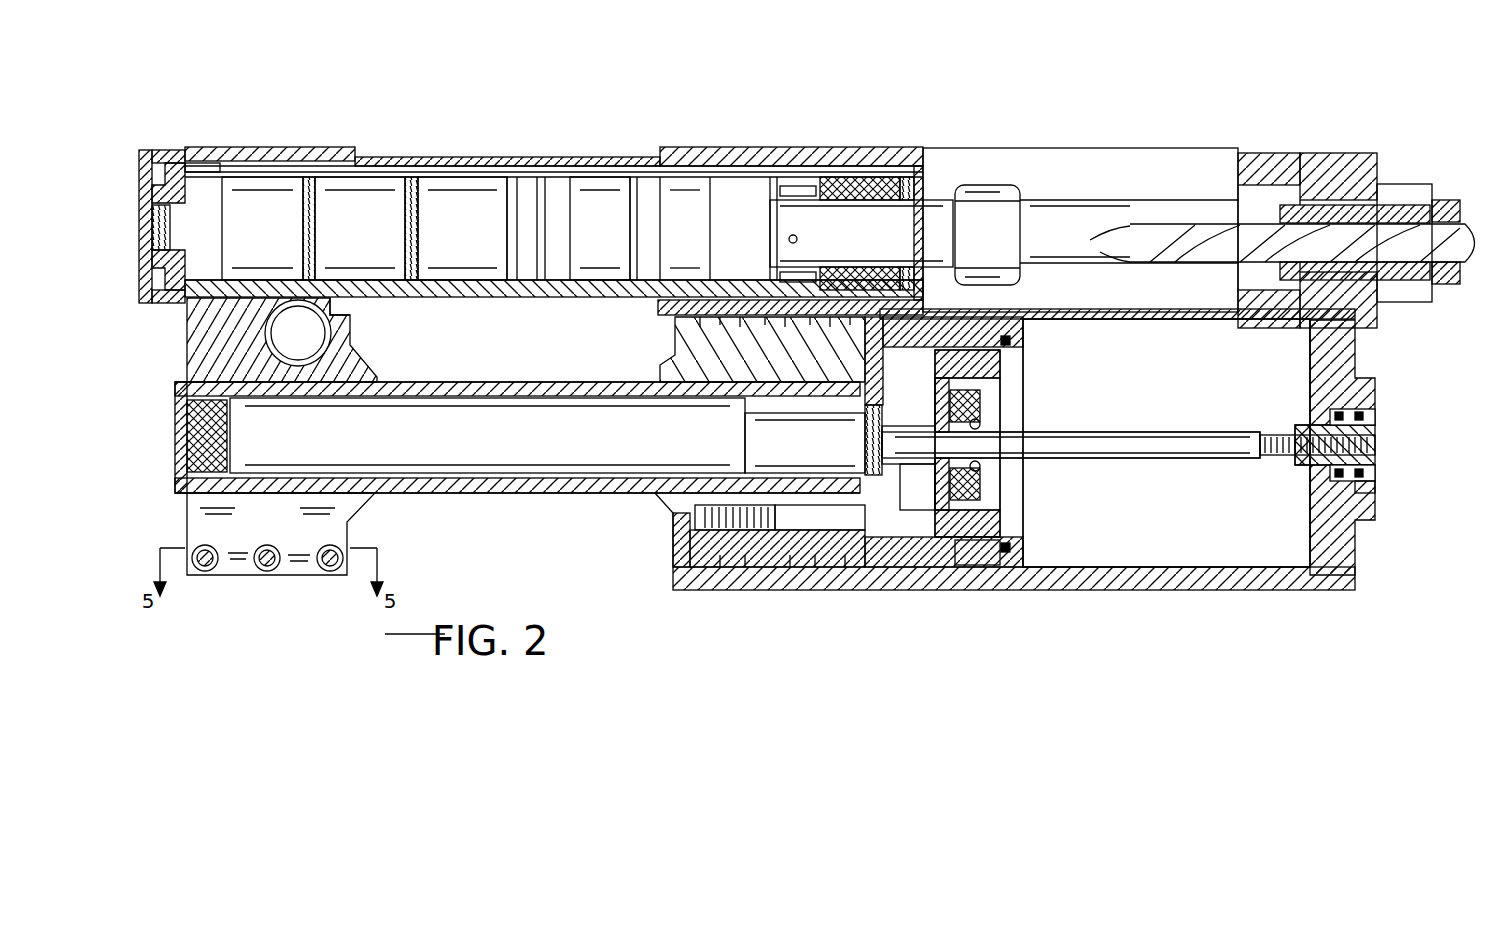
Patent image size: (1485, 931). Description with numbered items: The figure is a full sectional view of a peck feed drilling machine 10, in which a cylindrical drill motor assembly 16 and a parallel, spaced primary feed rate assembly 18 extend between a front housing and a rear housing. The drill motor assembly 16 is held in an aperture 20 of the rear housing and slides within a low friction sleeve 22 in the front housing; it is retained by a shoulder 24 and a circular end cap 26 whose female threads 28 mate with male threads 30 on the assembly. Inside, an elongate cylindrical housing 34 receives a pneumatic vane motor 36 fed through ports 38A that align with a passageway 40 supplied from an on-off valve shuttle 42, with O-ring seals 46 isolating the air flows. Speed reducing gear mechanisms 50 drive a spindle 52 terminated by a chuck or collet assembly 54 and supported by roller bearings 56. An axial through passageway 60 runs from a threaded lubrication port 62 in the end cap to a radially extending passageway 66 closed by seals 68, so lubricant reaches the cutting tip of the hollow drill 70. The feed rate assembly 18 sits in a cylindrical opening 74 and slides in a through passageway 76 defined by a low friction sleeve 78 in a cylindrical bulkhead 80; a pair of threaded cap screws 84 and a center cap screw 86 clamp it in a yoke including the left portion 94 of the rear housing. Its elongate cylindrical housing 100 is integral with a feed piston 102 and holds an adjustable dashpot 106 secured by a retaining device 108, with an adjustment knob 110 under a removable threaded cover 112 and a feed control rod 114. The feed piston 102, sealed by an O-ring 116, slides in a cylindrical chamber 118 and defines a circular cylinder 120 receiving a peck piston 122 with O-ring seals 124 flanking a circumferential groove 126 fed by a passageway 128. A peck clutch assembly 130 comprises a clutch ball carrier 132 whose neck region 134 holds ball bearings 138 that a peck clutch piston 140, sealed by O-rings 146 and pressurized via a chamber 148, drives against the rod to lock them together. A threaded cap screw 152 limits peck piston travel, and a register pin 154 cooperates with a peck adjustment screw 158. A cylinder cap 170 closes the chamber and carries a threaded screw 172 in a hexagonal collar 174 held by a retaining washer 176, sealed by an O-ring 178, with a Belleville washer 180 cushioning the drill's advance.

The peck feed drilling machine 10 is at (778, 60).
The cylindrical drill motor assembly 16 is at (622, 88).
The primary feed rate assembly 18 is at (598, 504).
The aperture 20 is at (266, 162).
The low friction sleeve 22 is at (662, 160).
The shoulder 24 is at (356, 148).
The circular end cap 26 is at (142, 158).
The female threads 28 is at (177, 160).
The male threads 30 is at (190, 162).
The elongate cylindrical housing 34 is at (432, 158).
The pneumatic vane motor 36 is at (377, 215).
The ports 38A is at (335, 282).
The passageway 40 is at (346, 322).
The on-off valve shuttle 42 is at (284, 347).
The O-ring seals 46 is at (306, 256).
The speed reducing gear mechanisms 50 is at (613, 243).
The spindle 52 is at (884, 255).
The chuck or collet assembly 54 is at (969, 248).
The roller bearings 56 is at (868, 178).
The axial through passageway 60 is at (522, 165).
The threaded lubrication port 62 is at (152, 230).
The radially extending passageway 66 is at (797, 238).
The seals 68 is at (777, 175).
The hollow drill 70 is at (1462, 224).
The cylindrical opening 74 is at (379, 385).
The through passageway 76 is at (673, 388).
The low friction sleeve 78 is at (655, 496).
The cylindrical bulkhead 80 is at (715, 548).
The threaded cap screws 84 is at (210, 572).
The center cap screw 86 is at (268, 572).
The left portion 94 is at (278, 520).
The elongate cylindrical housing 100 is at (430, 492).
The feed piston 102 is at (952, 560).
The adjustable dashpot 106 is at (458, 457).
The retaining device 108 is at (832, 478).
The adjustment knob 110 is at (228, 418).
The removable threaded cover 112 is at (182, 470).
The feed control rod 114 is at (1140, 432).
The O-ring 116 is at (1012, 556).
The cylindrical chamber 118 is at (1190, 515).
The circular cylinder 120 is at (1026, 346).
The peck piston 122 is at (1003, 521).
The O-ring seals 124 is at (977, 318).
The circumferential groove 126 is at (1002, 334).
The passageway 128 is at (932, 326).
The peck clutch assembly 130 is at (1088, 413).
The clutch ball carrier 132 is at (990, 397).
The neck region 134 is at (1000, 446).
The ball bearings 138 is at (986, 431).
The peck clutch piston 140 is at (876, 471).
The O-rings 146 is at (951, 460).
The chamber 148 is at (930, 492).
The threaded cap screw 152 is at (1003, 371).
The register pin 154 is at (976, 562).
The peck adjustment screw 158 is at (758, 545).
The cylinder cap 170 is at (1378, 398).
The threaded screw 172 is at (1288, 435).
The hexagonal collar 174 is at (1376, 432).
The retaining washer 176 is at (1320, 478).
The O-ring 178 is at (1376, 492).
The Belleville washer 180 is at (1372, 471).